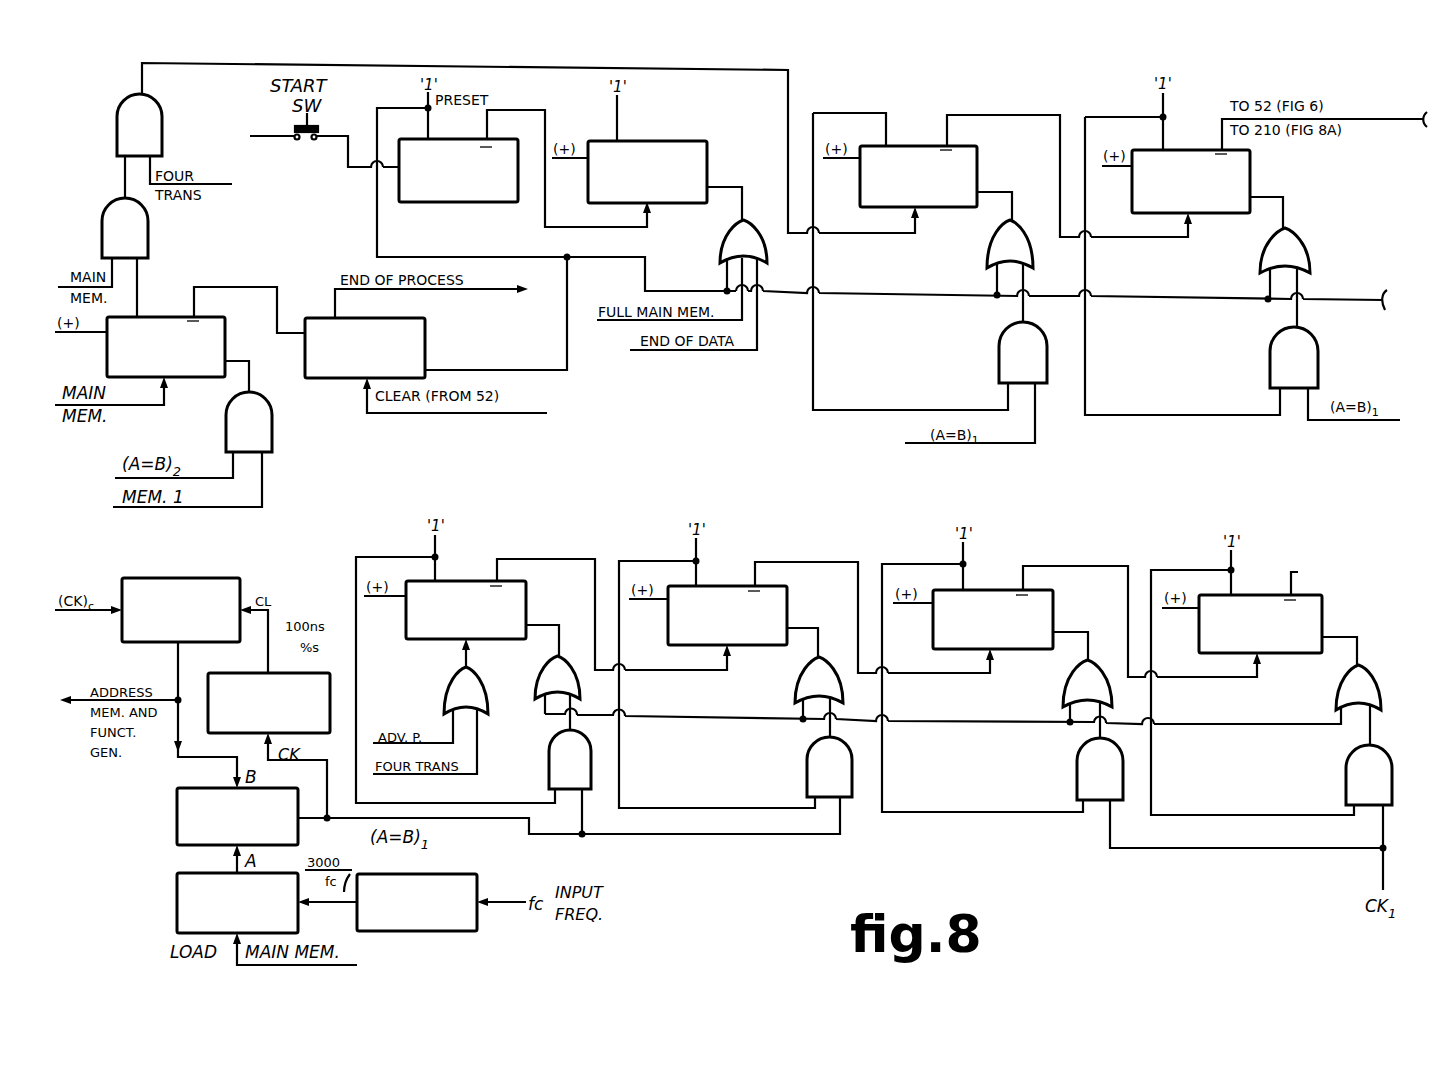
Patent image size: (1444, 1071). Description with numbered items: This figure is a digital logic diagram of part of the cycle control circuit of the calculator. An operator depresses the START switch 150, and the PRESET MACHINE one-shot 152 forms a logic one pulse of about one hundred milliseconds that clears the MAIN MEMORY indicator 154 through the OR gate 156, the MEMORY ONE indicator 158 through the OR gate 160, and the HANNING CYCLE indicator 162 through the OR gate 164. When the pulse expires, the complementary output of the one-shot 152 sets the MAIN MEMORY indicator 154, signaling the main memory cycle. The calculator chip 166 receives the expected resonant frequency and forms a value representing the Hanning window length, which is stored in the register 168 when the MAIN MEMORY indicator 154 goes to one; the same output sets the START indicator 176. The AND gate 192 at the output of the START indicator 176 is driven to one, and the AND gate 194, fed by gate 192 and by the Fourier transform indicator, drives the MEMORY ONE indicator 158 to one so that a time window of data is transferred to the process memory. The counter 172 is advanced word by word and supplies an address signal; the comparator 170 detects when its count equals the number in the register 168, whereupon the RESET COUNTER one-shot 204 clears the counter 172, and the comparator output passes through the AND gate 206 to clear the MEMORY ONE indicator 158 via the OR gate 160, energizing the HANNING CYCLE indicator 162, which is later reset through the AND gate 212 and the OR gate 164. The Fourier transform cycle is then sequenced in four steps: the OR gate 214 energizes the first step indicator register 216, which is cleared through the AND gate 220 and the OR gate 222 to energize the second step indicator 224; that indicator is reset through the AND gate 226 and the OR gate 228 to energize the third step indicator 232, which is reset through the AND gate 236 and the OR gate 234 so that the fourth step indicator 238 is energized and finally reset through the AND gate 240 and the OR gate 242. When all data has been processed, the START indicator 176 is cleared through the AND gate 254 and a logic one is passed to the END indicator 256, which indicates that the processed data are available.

The AND gate 194 is at (163, 124).
The AND gate 192 is at (148, 240).
The START switch 150 is at (302, 141).
The PRESET MACHINE monostable multivibrator 152 is at (430, 203).
The MAIN MEMORY indicator 154 is at (660, 141).
The OR gate 156 is at (720, 243).
The MEMORY 1 indicator 158 is at (905, 146).
The OR gate 160 is at (987, 255).
The HANNING CYCLE indicator 162 is at (1250, 170).
The OR gate 164 is at (1310, 255).
The AND gate 206 is at (999, 365).
The AND gate 212 is at (1318, 357).
The START indicator 176 is at (188, 380).
The AND gate 254 is at (272, 438).
The END indicator 256 is at (425, 348).
The counter 172 is at (183, 573).
The RESET COUNTER one-shot 204 is at (232, 656).
The comparator 170 is at (177, 818).
The register 168 is at (177, 905).
The calculator chip 166 is at (430, 931).
The STEP 1 cycle indicator register 216 is at (526, 598).
The OR gate 214 is at (444, 690).
The OR gate 222 is at (535, 665).
The AND gate 220 is at (549, 748).
The STEP 2 cycle indicator 224 is at (787, 600).
The OR gate 228 is at (795, 690).
The AND gate 226 is at (807, 772).
The STEP 3 indicator 232 is at (1053, 605).
The OR gate 234 is at (1063, 690).
The AND gate 236 is at (1077, 775).
The STEP 4 indicator 238 is at (1322, 608).
The OR gate 242 is at (1336, 700).
The AND gate 240 is at (1346, 780).